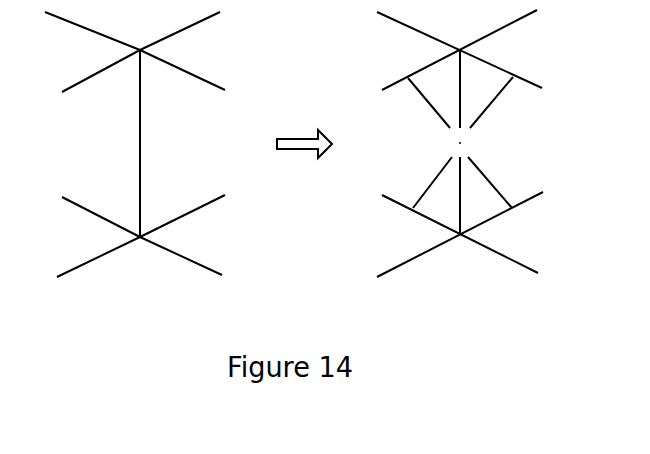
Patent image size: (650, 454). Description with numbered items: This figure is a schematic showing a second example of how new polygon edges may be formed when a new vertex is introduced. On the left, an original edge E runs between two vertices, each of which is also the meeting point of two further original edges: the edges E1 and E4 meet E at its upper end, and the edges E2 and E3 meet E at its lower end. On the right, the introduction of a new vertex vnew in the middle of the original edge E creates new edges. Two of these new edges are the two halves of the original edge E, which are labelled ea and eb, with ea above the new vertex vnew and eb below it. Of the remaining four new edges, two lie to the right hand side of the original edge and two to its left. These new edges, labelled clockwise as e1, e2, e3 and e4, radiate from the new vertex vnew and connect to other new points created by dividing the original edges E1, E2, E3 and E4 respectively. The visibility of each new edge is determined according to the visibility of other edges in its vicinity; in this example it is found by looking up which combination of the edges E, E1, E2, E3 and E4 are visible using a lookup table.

The original edge E is at (147, 143).
The original edge E1 is at (184, 51).
The original edge E2 is at (184, 235).
The original edge E3 is at (93, 237).
The original edge E4 is at (92, 52).
The new edge ea is at (473, 89).
The new edge eb is at (473, 196).
The new edge e1 is at (495, 102).
The new edge e2 is at (494, 182).
The new edge e3 is at (430, 182).
The new edge e4 is at (429, 103).
The new vertex v_new vnew is at (457, 145).